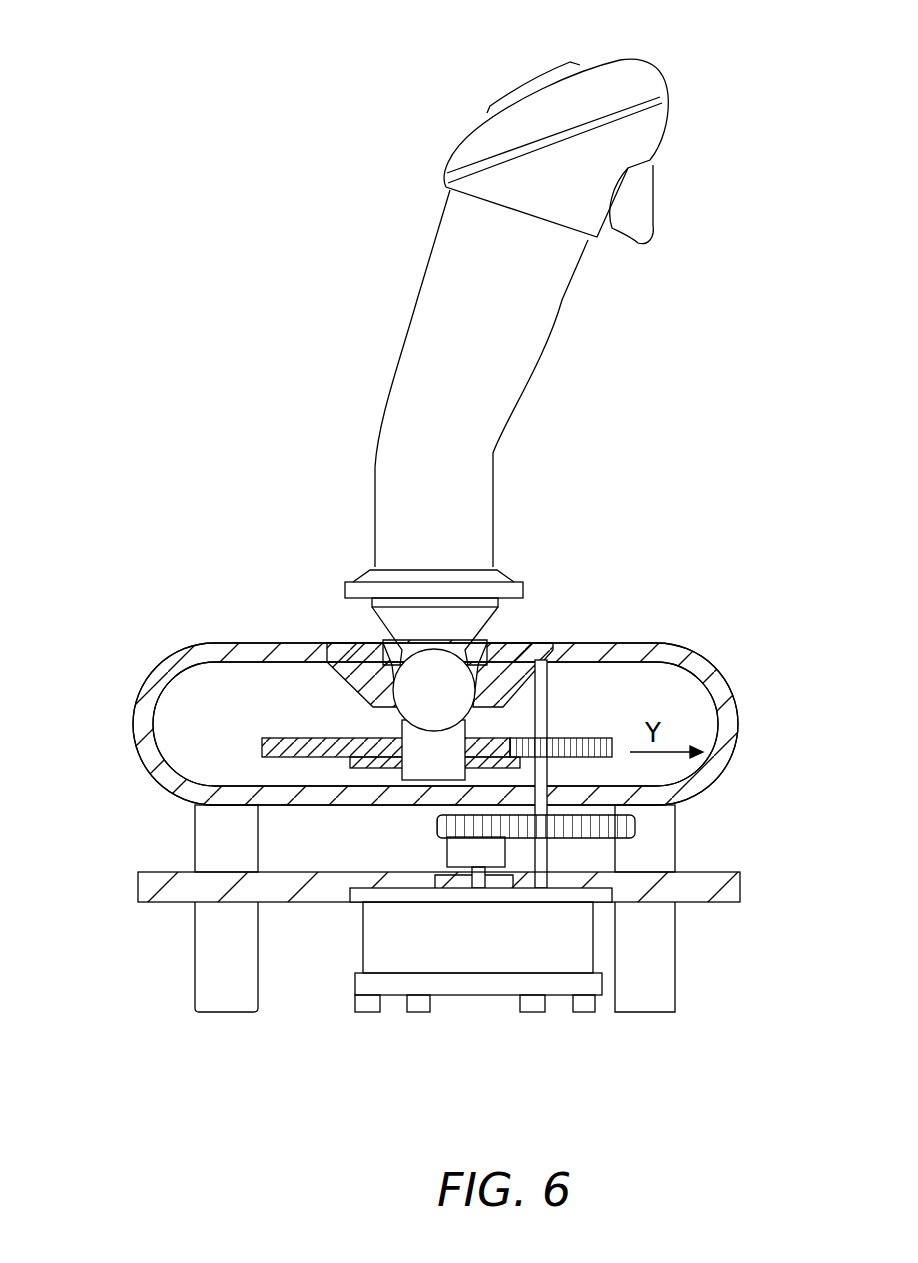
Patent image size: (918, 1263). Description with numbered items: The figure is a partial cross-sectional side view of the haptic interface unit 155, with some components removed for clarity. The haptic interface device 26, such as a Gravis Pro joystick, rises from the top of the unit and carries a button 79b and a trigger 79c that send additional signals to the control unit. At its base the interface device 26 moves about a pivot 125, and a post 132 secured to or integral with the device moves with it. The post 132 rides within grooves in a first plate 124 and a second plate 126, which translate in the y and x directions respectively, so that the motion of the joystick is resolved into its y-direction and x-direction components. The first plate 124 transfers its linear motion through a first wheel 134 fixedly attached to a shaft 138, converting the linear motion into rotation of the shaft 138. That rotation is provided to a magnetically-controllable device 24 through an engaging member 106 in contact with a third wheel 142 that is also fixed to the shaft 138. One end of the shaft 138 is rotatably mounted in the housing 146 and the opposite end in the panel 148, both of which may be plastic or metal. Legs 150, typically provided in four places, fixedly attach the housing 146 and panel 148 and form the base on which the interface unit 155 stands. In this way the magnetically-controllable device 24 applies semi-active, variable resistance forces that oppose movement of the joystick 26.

The button 79b is at (537, 75).
The trigger 79c is at (652, 198).
The haptic interface unit 155 is at (745, 338).
The haptic interface device 26 is at (443, 343).
The pivot 125 is at (430, 686).
The post 132 is at (425, 745).
The shaft 138 is at (543, 693).
The first wheel 134 is at (563, 740).
The first plate 124 is at (272, 737).
The second plate 126 is at (347, 762).
The housing 146 is at (733, 692).
The third wheel 142 is at (640, 826).
The engaging member 106 is at (447, 860).
The panel 148 is at (712, 893).
The legs 150 is at (668, 988).
The magnetically-controllable device 24 is at (478, 952).